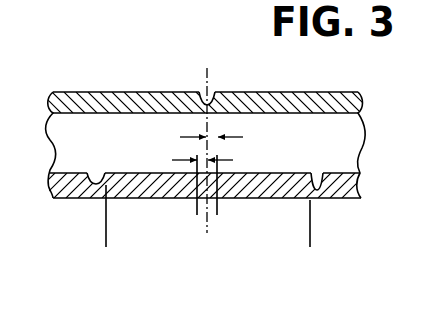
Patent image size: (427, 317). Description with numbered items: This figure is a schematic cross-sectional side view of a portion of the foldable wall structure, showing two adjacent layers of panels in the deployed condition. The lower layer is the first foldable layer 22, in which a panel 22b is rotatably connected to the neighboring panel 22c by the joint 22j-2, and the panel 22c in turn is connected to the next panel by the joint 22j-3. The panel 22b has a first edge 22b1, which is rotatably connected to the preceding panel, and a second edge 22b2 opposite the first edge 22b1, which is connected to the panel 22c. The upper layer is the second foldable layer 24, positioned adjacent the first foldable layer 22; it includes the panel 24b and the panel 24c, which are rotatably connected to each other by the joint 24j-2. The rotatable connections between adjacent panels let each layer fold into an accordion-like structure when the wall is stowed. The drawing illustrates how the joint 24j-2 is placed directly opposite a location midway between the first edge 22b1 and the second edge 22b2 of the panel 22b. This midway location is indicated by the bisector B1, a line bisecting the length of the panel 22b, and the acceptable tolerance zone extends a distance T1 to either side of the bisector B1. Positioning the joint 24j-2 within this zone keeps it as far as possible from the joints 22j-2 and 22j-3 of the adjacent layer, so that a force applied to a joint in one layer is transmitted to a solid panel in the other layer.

The first foldable layer 22 is at (146, 200).
The panel 22b is at (175, 199).
The first edge 22b1 is at (106, 228).
The second edge 22b2 is at (311, 228).
The panel 22c is at (246, 187).
The joint 22j-2 is at (96, 184).
The joint 22j-3 is at (318, 190).
The second foldable layer 24 is at (143, 88).
The panel 24b is at (100, 92).
The panel 24c is at (315, 92).
The joint 24j-2 is at (204, 90).
The bisector B1 is at (207, 225).
The distance T1 is at (172, 160).